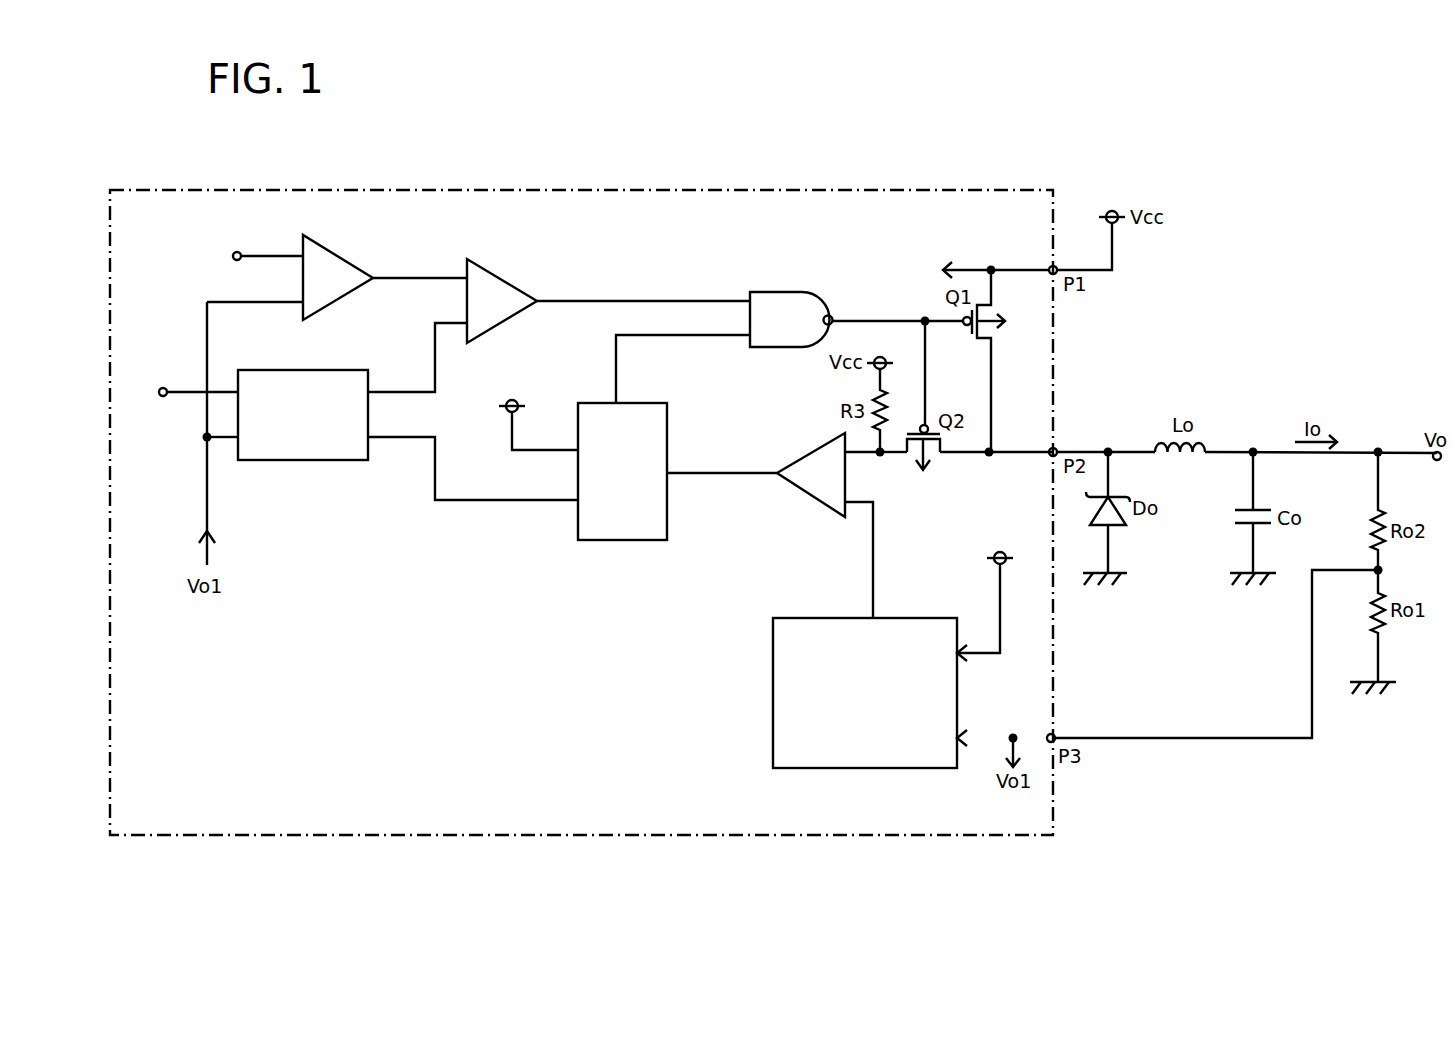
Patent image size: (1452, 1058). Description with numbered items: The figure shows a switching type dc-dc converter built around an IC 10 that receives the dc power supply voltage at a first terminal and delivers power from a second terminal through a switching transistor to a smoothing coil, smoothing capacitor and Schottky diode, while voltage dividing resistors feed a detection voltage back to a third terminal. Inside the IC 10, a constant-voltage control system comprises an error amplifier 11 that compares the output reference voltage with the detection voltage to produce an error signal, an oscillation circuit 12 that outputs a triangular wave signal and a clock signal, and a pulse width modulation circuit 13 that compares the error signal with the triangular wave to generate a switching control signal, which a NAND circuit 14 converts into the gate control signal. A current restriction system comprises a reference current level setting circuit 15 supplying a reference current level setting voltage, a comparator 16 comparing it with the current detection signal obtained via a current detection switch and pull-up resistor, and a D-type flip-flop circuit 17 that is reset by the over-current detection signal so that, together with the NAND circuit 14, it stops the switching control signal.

The IC 10 is at (918, 190).
The error amplifier 11 is at (337, 256).
The oscillation circuit 12 is at (305, 370).
The pulse width modulation circuit 13 is at (502, 277).
The NAND circuit 14 is at (780, 292).
The reference current level setting circuit 15 is at (773, 678).
The comparator 16 is at (808, 496).
The D-type flip-flop circuit 17 is at (625, 540).